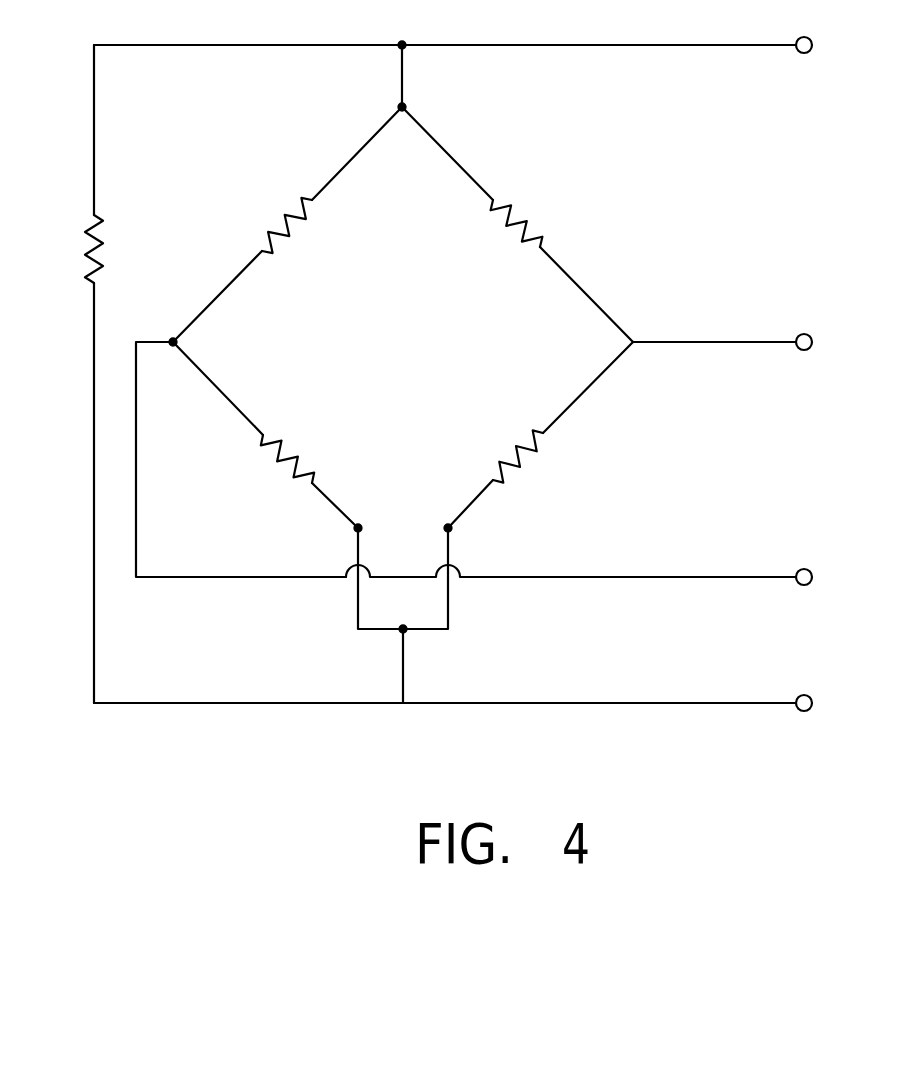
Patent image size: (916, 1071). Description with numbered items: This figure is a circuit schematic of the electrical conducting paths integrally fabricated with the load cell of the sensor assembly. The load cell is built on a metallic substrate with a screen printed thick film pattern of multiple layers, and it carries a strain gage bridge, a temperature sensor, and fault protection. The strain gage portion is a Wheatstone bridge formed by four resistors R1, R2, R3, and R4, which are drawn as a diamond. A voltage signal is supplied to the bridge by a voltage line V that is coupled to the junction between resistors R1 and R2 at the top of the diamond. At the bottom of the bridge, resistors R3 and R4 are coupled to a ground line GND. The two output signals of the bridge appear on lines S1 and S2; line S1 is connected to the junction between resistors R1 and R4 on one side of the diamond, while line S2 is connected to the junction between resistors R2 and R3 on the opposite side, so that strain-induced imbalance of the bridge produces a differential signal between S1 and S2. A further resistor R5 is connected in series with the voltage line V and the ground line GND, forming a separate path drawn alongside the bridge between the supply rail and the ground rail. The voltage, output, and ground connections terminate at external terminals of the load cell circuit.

The resistor R1 is at (278, 224).
The resistor R2 is at (526, 220).
The resistor R3 is at (527, 463).
The resistor R4 is at (280, 465).
The resistor R5 is at (71, 249).
The voltage line V is at (817, 44).
The output signal line S1 is at (824, 341).
The output signal line S2 is at (826, 578).
The ground line GND is at (837, 704).